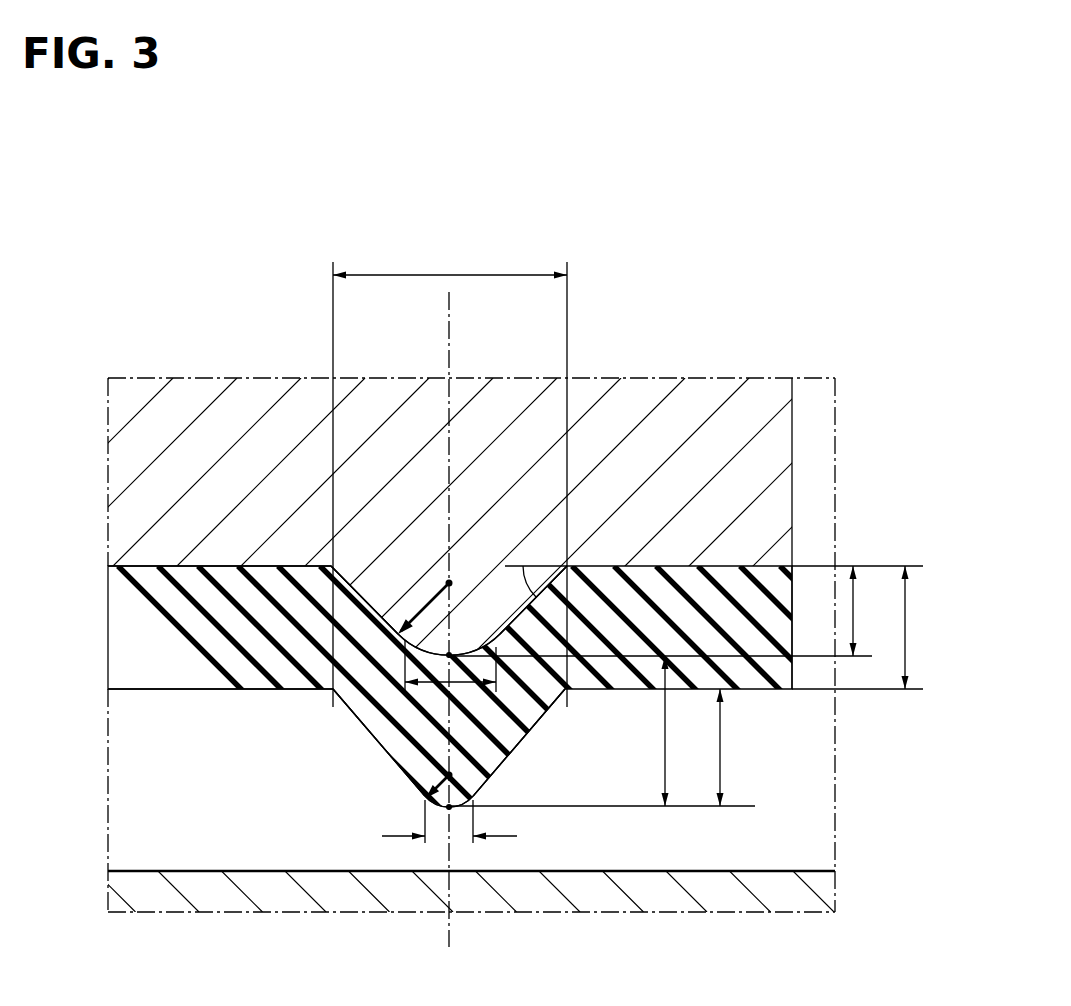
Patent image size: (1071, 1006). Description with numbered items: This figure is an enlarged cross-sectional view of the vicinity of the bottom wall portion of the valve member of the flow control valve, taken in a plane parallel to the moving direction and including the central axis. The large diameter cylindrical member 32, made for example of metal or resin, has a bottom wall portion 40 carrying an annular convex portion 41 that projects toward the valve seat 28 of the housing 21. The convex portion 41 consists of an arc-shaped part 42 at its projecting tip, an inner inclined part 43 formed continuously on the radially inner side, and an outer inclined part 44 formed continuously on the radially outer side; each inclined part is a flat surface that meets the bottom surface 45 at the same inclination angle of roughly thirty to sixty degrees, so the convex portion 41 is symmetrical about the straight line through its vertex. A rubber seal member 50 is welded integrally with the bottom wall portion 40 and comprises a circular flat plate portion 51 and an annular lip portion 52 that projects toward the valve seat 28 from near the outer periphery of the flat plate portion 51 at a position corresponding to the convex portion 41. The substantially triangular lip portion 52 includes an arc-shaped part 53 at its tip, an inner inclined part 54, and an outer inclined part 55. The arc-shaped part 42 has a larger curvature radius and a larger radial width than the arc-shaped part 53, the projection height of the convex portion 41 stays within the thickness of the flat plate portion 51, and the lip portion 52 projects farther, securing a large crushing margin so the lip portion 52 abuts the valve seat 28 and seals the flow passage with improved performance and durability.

The housing 21 is at (160, 890).
The valve seat 28 is at (805, 826).
The large diameter cylindrical member 32 is at (697, 299).
The bottom wall portion 40 is at (703, 405).
The convex portion 41 is at (384, 583).
The arc-shaped part 42 is at (362, 705).
The inner inclined part 43 is at (358, 603).
The outer inclined part 44 is at (562, 592).
The bottom surface 45 is at (147, 568).
The rubber seal member 50 is at (155, 691).
The flat plate portion 51 is at (245, 675).
The lip portion 52 is at (485, 755).
The arc-shaped part 53 is at (441, 810).
The inner inclined part 54 is at (377, 733).
The outer inclined part 55 is at (549, 710).